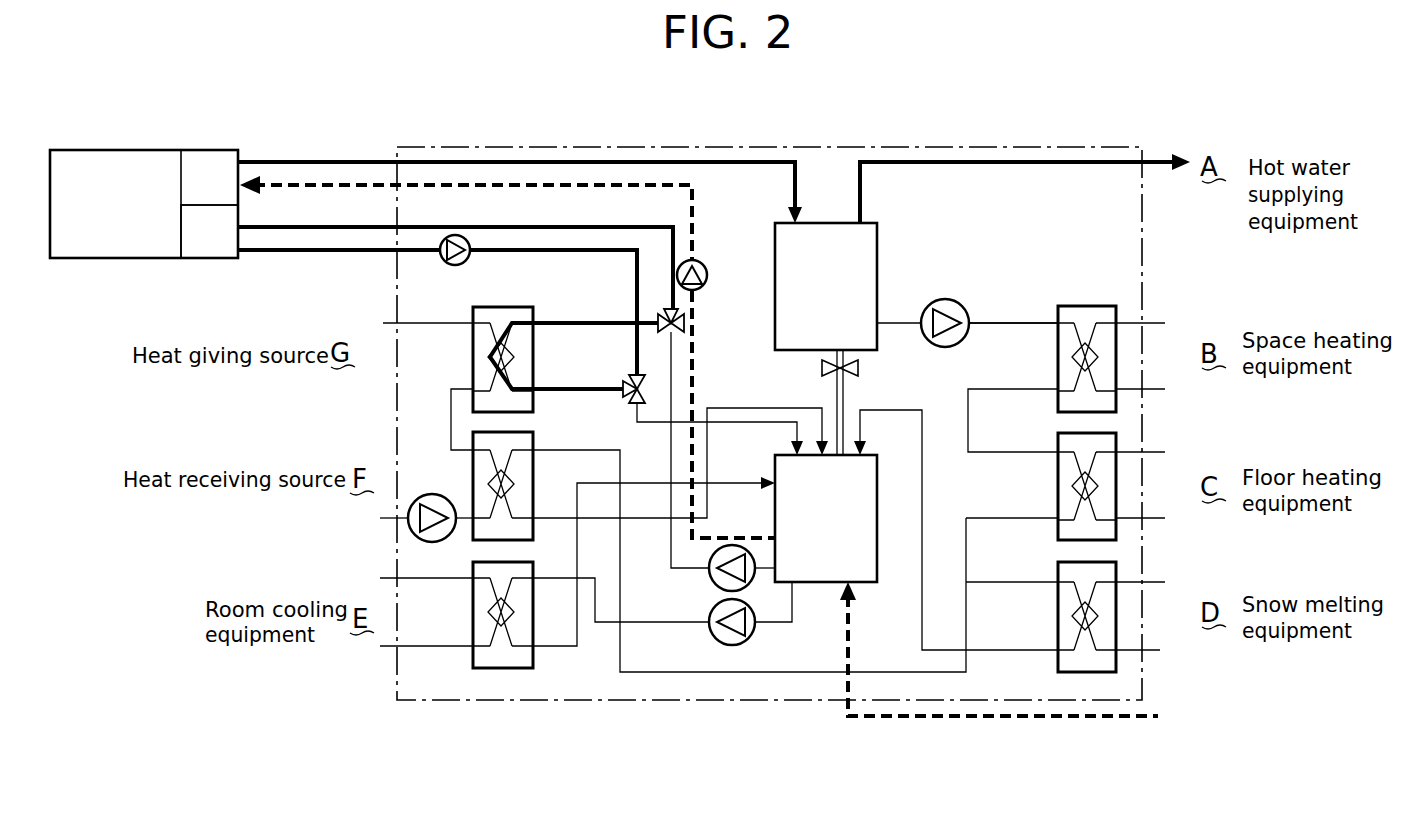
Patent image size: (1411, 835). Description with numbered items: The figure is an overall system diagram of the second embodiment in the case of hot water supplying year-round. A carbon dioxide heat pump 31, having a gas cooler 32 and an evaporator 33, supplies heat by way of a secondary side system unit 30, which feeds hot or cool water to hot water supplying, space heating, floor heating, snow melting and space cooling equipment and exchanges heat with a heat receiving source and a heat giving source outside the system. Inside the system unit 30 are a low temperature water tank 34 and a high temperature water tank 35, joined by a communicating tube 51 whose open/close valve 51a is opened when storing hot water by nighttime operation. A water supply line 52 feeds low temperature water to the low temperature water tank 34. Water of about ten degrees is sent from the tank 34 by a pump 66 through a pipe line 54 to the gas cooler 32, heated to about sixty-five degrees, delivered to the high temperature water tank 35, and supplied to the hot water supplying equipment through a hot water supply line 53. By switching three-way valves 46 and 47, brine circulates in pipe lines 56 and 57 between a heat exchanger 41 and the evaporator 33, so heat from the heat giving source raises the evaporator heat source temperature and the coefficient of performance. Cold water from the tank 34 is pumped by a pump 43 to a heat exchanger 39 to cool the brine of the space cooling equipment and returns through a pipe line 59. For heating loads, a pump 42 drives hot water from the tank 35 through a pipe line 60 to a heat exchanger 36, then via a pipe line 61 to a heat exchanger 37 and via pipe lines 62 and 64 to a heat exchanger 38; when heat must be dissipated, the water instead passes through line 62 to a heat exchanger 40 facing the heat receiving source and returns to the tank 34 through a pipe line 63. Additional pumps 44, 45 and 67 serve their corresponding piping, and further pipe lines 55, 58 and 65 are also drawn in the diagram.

The secondary side system unit 30 is at (573, 147).
The CO2 heat pump 31 is at (92, 150).
The gas cooler 32 is at (209, 158).
The evaporator 33 is at (213, 258).
The low temperature water tank 34 is at (828, 588).
The high temperature water tank 35 is at (833, 247).
The heat exchanger 36 is at (1118, 309).
The heat exchanger 37 is at (1118, 440).
The heat exchanger 38 is at (1118, 567).
The heat exchanger 39 is at (473, 612).
The heat exchanger 40 is at (473, 468).
The heat exchanger 41 is at (473, 344).
The pump 42 is at (946, 298).
The pump 43 is at (748, 634).
The pump 44 is at (712, 584).
The pump 45 is at (432, 542).
The three-way valve 46 is at (684, 323).
The three-way valve 47 is at (624, 396).
The communicating tube 51 is at (846, 376).
The open/close valve 51a is at (822, 368).
The water supply line 52 is at (1138, 718).
The hot water supply line 53 is at (1024, 162).
The pipe line 54 is at (649, 185).
The hot water pipe 55 is at (426, 162).
The pipe line 56 is at (535, 227).
The pipe line 57 is at (493, 250).
The pipe 58 is at (662, 622).
The pipe line 59 is at (577, 634).
The pipe line 60 is at (1013, 322).
The pipe line 61 is at (1014, 389).
The pipe line 62 is at (1014, 518).
The pipe line 63 is at (648, 518).
The pipe line 64 is at (1014, 582).
The pipe 65 is at (922, 624).
The pump 66 is at (708, 275).
The pump 67 is at (447, 265).